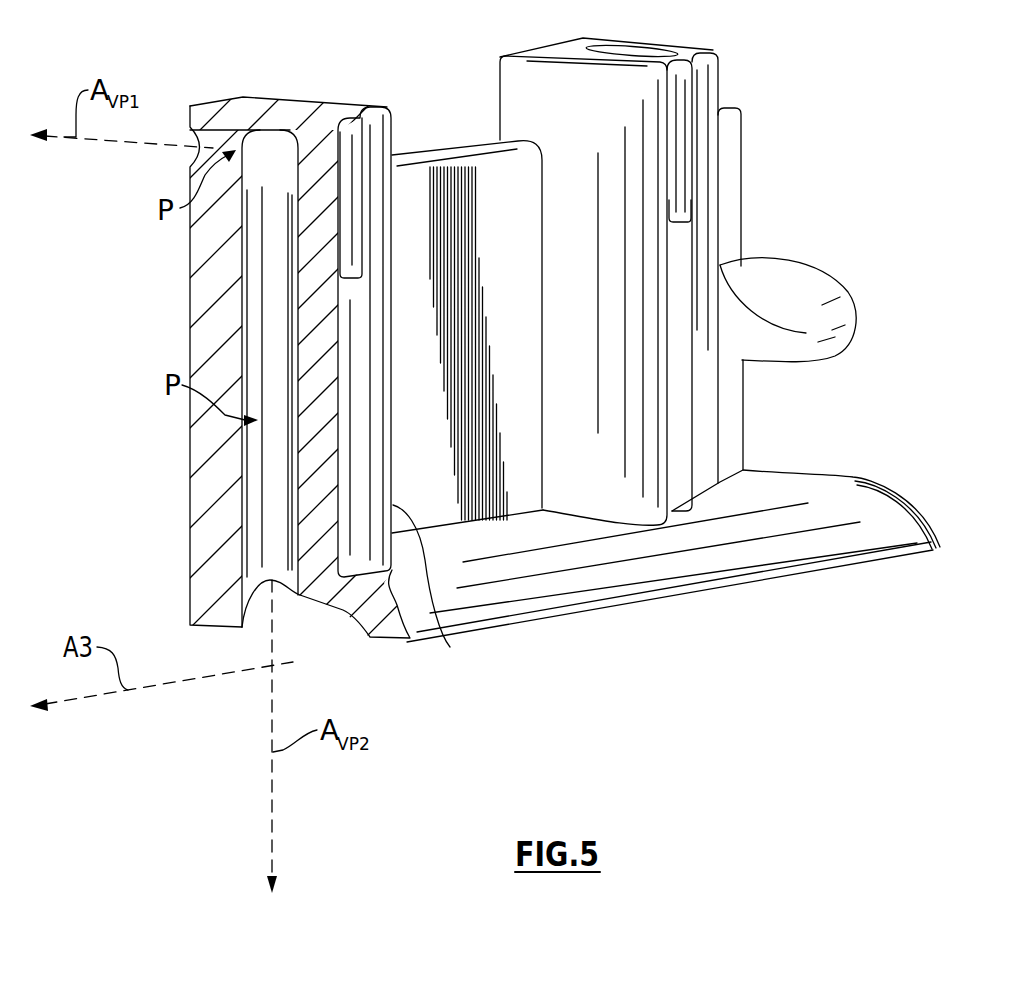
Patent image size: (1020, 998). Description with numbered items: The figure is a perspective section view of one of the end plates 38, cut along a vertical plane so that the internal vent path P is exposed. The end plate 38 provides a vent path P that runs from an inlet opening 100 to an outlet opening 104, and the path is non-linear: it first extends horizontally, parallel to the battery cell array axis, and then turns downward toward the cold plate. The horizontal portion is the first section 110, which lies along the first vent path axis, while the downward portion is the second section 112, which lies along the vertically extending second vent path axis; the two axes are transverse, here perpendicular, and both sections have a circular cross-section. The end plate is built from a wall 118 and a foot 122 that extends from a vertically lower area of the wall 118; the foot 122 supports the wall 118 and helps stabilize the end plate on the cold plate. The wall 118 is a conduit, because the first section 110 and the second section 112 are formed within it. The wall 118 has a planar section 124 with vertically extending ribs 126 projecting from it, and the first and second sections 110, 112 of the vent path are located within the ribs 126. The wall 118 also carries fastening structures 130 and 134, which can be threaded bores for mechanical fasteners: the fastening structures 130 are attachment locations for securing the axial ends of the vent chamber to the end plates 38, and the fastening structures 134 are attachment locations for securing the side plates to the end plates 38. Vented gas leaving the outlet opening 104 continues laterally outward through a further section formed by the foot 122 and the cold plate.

The inlet opening 100 is at (170, 80).
The outlet opening 104 is at (247, 655).
The first section 110 is at (260, 132).
The second section 112 is at (246, 519).
The wall 118 is at (450, 647).
The foot 122 is at (550, 585).
The planar section 124 is at (517, 447).
The ribs 126 is at (650, 347).
The fastening structures 130 is at (349, 158).
The fastening structures 134 is at (810, 287).
The end plates 38 is at (848, 142).